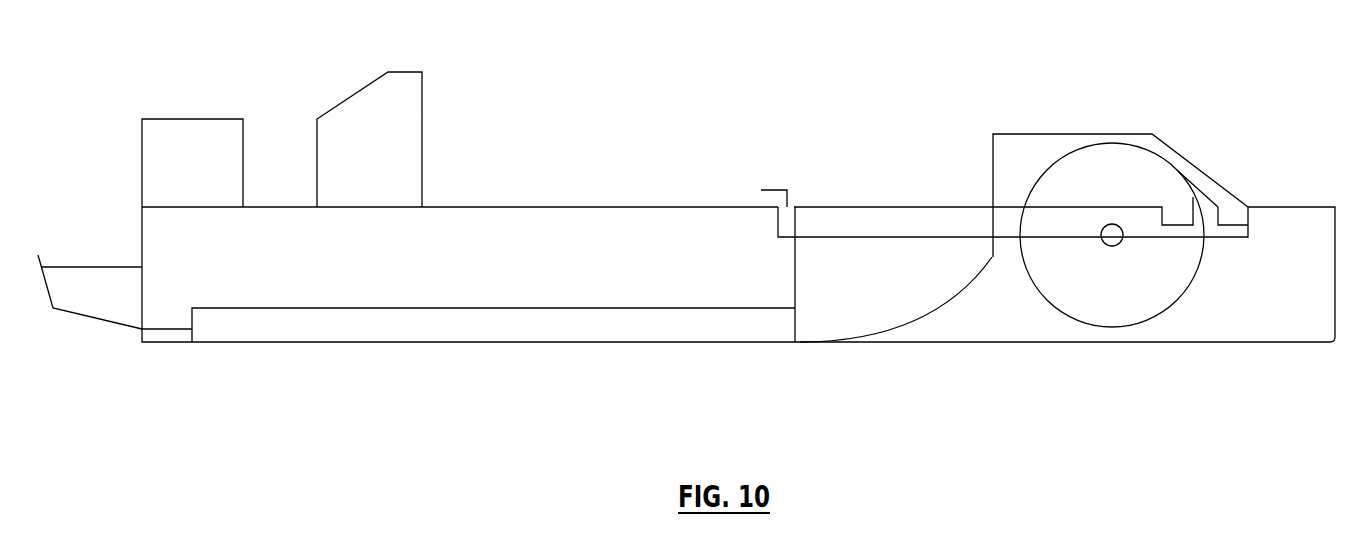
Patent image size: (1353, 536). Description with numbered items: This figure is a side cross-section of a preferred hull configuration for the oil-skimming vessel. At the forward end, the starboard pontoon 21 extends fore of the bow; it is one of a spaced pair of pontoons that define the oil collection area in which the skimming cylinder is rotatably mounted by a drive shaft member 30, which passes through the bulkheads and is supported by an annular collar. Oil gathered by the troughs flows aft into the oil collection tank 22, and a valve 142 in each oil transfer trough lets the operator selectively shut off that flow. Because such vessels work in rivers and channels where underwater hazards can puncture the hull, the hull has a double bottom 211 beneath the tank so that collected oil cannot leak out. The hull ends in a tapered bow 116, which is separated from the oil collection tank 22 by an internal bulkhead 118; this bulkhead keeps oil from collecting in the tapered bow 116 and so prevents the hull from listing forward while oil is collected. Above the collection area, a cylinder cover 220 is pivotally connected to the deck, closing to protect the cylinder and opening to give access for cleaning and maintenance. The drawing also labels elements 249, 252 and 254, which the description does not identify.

The starboard pontoon 21 is at (989, 320).
The oil collection tank 22 is at (457, 280).
The drive shaft member 30 is at (1113, 246).
The tapered bow 116 is at (917, 315).
The internal bulkhead 118 is at (794, 275).
The valve 142 is at (777, 187).
The double bottom 211 is at (299, 309).
The cylinder cover 220 is at (1070, 134).
The blade 249 is at (85, 277).
The angled block 252 is at (397, 97).
The block 254 is at (192, 118).